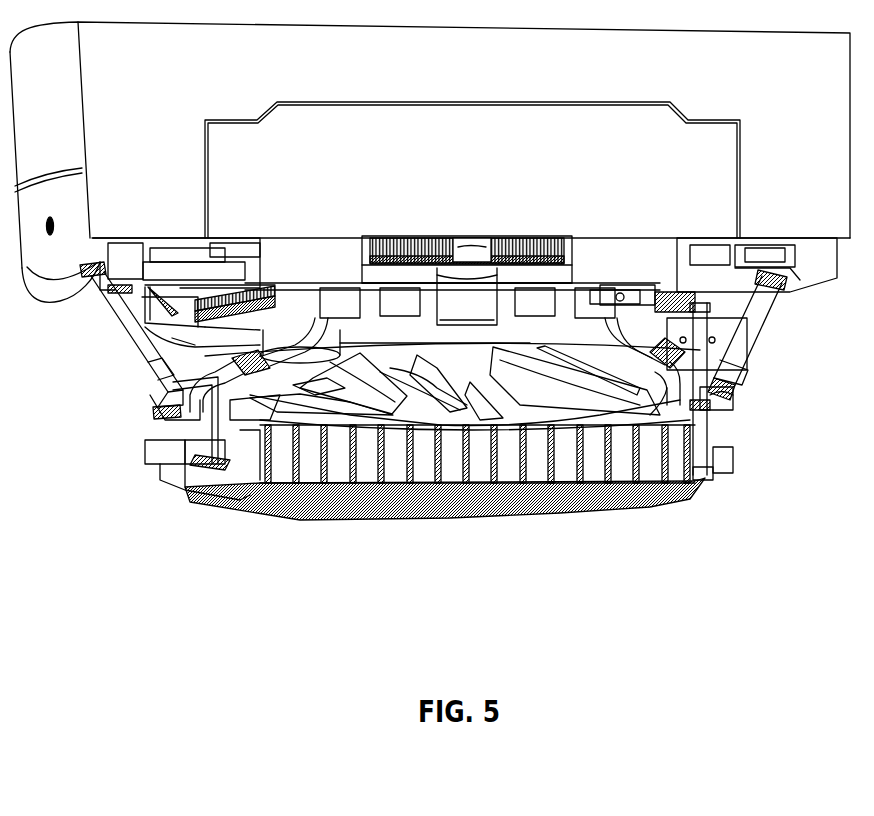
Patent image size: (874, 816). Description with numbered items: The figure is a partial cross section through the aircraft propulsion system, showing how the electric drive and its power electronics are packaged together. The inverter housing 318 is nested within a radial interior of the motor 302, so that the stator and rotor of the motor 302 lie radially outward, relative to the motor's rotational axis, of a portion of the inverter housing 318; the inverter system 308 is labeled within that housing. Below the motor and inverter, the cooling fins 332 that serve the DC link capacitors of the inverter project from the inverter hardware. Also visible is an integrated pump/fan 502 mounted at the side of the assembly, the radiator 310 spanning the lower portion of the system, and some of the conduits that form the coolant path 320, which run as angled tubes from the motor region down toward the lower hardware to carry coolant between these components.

The motor 302 is at (430, 162).
The inverter system 308 is at (452, 234).
The radiator 310 is at (327, 507).
The inverter housing 318 is at (740, 150).
The coolant path 320 is at (107, 330).
The cooling fins 332 is at (310, 280).
The integrated pump/fan 502 is at (707, 433).